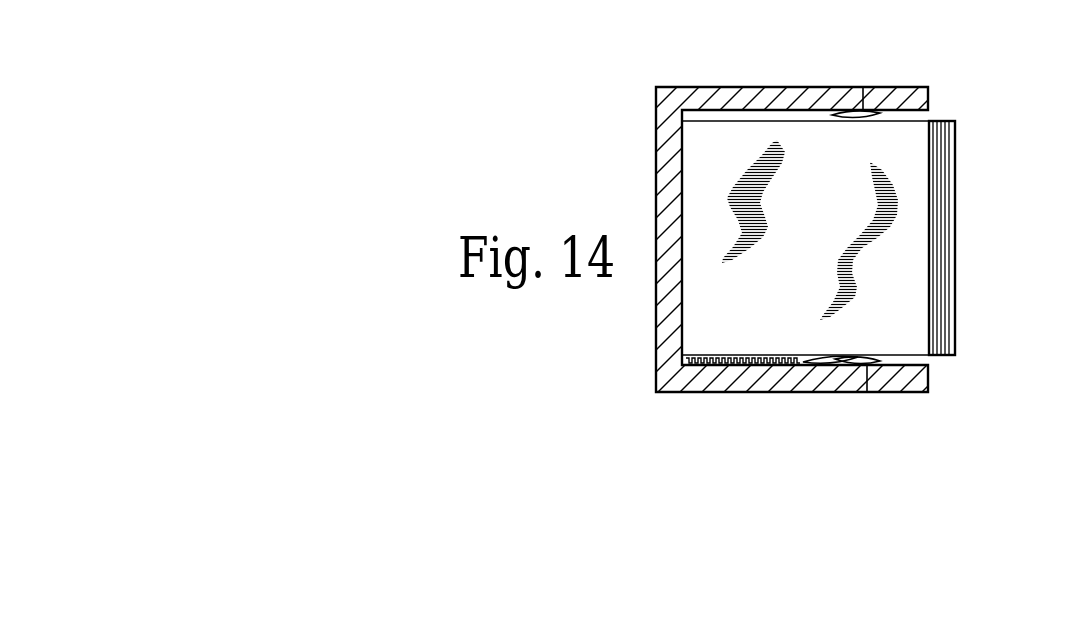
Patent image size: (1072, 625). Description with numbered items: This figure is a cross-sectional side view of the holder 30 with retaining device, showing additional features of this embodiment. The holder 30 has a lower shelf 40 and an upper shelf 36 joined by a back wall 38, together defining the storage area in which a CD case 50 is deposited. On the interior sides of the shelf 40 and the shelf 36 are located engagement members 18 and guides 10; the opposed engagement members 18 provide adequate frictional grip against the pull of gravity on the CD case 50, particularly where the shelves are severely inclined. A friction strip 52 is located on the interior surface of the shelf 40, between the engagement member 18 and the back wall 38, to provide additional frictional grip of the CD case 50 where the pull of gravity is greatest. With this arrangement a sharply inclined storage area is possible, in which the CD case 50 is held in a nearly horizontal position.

The holder 30 is at (648, 152).
The shelf 36 is at (827, 95).
The back wall 38 is at (658, 297).
The shelf 40 is at (737, 383).
The CD case 50 is at (955, 213).
The friction strip 52 is at (763, 368).
The guide 10 is at (878, 113).
The engagement member 18 is at (832, 116).